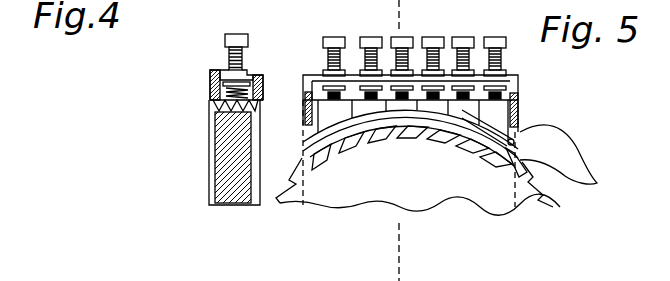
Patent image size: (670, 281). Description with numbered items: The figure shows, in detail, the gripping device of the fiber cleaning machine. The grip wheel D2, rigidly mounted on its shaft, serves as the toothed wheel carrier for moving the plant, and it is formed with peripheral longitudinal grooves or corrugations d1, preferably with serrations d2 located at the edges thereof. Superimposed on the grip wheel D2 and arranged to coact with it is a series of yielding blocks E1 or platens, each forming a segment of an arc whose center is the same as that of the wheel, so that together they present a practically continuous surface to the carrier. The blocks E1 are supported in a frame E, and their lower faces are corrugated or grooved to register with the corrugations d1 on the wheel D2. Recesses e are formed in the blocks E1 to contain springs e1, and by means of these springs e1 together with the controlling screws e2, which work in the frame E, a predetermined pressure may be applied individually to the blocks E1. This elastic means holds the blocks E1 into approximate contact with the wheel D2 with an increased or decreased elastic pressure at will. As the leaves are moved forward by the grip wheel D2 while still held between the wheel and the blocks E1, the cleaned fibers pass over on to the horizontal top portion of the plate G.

In FIG. 4, the frame E is at (222, 69).
In FIG. 5, the frame E is at (410, 108).
In FIG. 4, the controlling screws e2 is at (243, 41).
In FIG. 5, the controlling screws e2 is at (335, 43).
In FIG. 4, the springs e1 is at (223, 86).
In FIG. 5, the springs e1 is at (303, 91).
In FIG. 4, the recesses e is at (256, 102).
In FIG. 5, the recesses e is at (327, 107).
In FIG. 4, the yielding blocks E1 is at (215, 104).
In FIG. 5, the yielding blocks E1 is at (484, 132).
In FIG. 4, the grip wheel D2 is at (226, 152).
In FIG. 5, the peripheral longitudinal grooves or corrugations d1 is at (325, 143).
In FIG. 5, the serrations d2 is at (478, 139).
In FIG. 5, the plate G is at (540, 153).